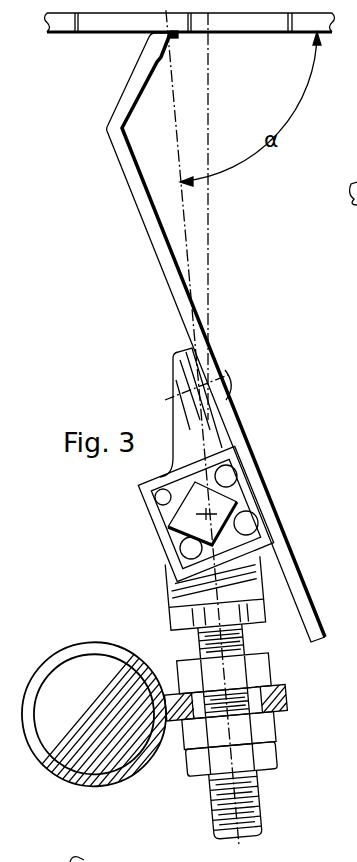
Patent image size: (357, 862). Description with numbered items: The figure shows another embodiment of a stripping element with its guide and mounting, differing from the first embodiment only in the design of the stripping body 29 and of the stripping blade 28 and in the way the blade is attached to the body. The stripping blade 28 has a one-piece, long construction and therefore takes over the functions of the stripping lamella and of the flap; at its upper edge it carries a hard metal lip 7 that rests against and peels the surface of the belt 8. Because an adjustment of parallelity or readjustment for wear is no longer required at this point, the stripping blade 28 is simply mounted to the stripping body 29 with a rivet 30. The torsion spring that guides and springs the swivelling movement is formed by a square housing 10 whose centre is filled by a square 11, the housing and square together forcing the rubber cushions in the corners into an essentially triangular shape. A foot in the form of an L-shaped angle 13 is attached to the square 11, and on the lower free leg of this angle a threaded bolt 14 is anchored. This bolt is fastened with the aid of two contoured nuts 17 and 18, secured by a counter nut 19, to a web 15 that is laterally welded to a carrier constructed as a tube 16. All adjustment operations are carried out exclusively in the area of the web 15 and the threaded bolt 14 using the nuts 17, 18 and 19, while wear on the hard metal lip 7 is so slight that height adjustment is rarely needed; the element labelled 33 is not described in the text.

The hard metal lip 7 is at (177, 37).
The belt 8 is at (96, 32).
The square housing 10 is at (157, 508).
The square 11 is at (243, 517).
The L-shaped angle 13 is at (173, 600).
The threaded bolt 14 is at (215, 806).
The web 15 is at (287, 697).
The tube 16 is at (83, 644).
The contoured nut 17 is at (268, 672).
The contoured nut 18 is at (275, 727).
The counter nut 19 is at (278, 753).
The stripping blade 28 is at (141, 209).
The stripping body 29 is at (178, 382).
The rivet 30 is at (229, 366).
The support 33 is at (102, 861).